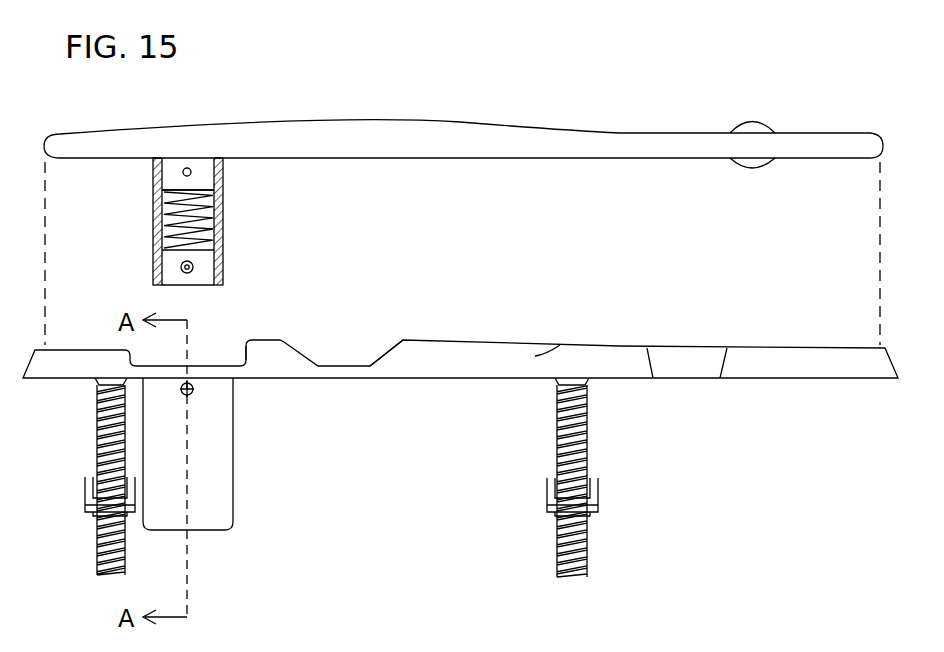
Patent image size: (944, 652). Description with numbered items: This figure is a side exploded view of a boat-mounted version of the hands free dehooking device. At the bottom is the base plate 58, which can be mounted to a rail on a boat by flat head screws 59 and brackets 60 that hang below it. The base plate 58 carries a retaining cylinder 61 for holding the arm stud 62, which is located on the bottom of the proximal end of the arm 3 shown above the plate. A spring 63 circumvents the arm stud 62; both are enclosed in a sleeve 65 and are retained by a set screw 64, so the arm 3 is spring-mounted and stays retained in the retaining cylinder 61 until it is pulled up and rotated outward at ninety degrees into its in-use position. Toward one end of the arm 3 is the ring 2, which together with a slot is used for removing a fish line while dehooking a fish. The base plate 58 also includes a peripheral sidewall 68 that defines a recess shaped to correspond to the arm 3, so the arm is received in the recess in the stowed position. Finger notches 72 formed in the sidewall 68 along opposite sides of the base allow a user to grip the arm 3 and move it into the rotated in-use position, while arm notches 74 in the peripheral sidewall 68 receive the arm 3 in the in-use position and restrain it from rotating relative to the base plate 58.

The ring 2 is at (868, 133).
The arm 3 is at (350, 121).
The base plate 58 is at (748, 369).
The flat head screws 59 is at (97, 432).
The brackets 60 is at (86, 500).
The retaining cylinder 61 is at (233, 448).
The arm stud 62 is at (218, 263).
The spring 63 is at (197, 218).
The set screw 64 is at (181, 266).
The sleeve 65 is at (158, 205).
The peripheral sidewall 68 is at (545, 355).
The finger notches 72 is at (380, 356).
The arm notches 74 is at (238, 352).